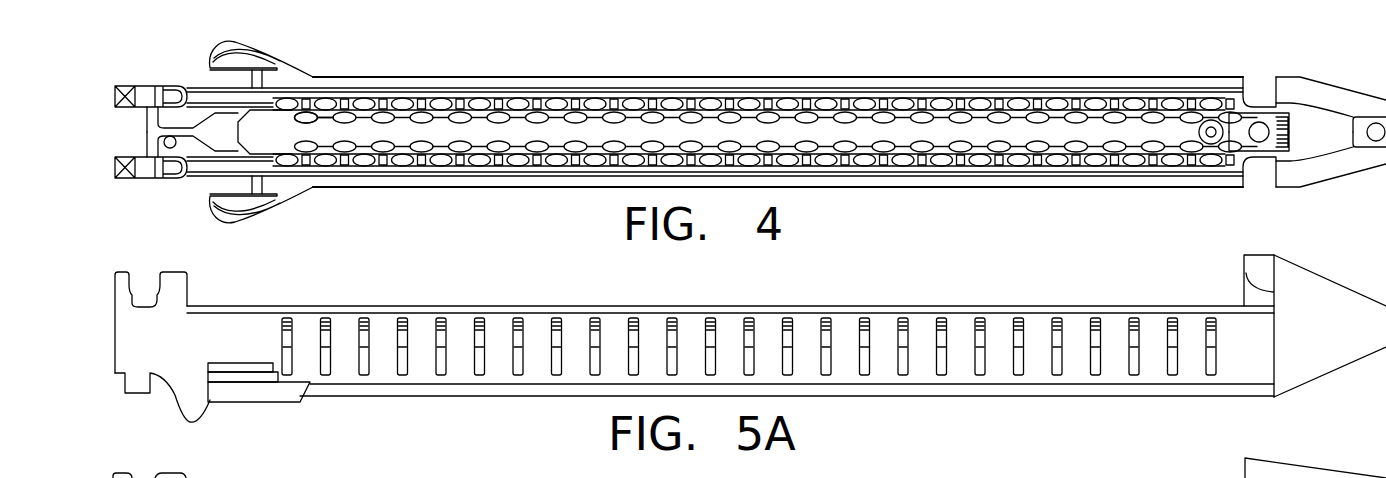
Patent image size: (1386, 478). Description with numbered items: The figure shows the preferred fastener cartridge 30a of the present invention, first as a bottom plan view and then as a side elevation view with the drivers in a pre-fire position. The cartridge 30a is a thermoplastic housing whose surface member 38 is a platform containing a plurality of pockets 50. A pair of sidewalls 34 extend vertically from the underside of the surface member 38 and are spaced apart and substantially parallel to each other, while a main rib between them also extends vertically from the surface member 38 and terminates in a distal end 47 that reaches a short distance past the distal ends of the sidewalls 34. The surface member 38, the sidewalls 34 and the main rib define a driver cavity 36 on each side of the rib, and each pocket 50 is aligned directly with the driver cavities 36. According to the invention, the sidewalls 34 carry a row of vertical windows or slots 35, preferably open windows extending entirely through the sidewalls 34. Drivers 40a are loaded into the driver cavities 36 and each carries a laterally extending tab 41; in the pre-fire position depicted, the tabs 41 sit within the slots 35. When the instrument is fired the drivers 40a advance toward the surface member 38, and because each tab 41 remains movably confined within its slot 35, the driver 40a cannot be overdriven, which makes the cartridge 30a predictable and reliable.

In FIG. 4, the cartridge 30a is at (1219, 72).
In FIG. 5A, the cartridge 30a is at (1164, 297).
In FIG. 4, the driver cavity 36 is at (488, 112).
In FIG. 4, the distal end 47 is at (732, 130).
In FIG. 5A, the distal end 47 is at (925, 310).
In FIG. 4, the pockets 50 is at (982, 98).
In FIG. 5A, the tab 41 is at (442, 318).
In FIG. 5A, the drivers 40a is at (560, 338).
In FIG. 5A, the sidewalls 34 is at (770, 338).
In FIG. 5A, the slots 35 is at (397, 365).
In FIG. 5A, the surface member 38 is at (1189, 397).